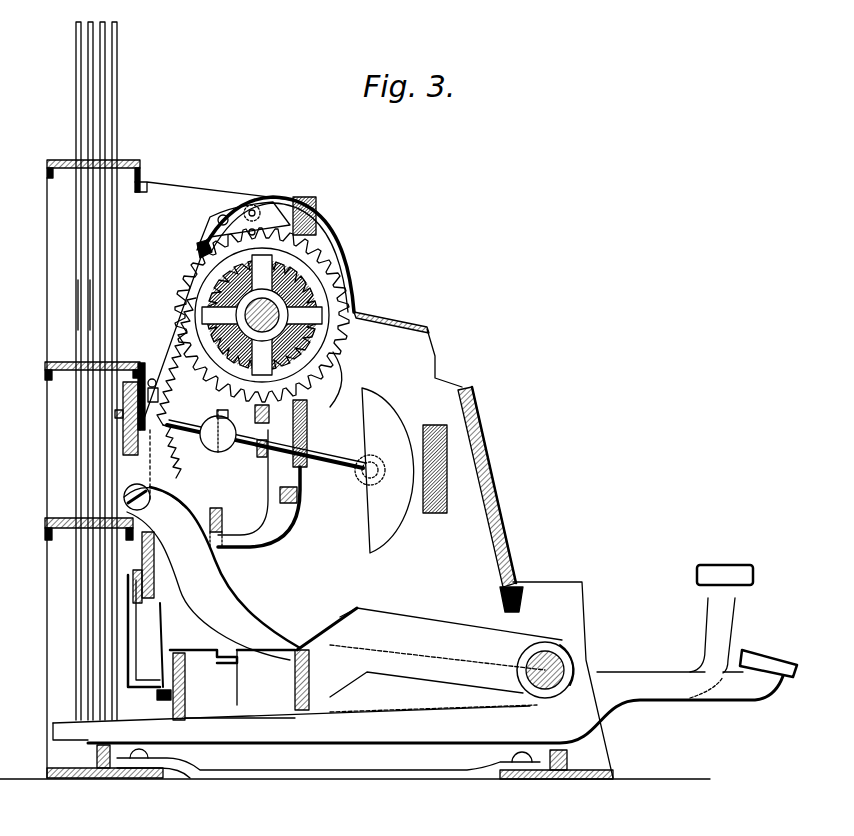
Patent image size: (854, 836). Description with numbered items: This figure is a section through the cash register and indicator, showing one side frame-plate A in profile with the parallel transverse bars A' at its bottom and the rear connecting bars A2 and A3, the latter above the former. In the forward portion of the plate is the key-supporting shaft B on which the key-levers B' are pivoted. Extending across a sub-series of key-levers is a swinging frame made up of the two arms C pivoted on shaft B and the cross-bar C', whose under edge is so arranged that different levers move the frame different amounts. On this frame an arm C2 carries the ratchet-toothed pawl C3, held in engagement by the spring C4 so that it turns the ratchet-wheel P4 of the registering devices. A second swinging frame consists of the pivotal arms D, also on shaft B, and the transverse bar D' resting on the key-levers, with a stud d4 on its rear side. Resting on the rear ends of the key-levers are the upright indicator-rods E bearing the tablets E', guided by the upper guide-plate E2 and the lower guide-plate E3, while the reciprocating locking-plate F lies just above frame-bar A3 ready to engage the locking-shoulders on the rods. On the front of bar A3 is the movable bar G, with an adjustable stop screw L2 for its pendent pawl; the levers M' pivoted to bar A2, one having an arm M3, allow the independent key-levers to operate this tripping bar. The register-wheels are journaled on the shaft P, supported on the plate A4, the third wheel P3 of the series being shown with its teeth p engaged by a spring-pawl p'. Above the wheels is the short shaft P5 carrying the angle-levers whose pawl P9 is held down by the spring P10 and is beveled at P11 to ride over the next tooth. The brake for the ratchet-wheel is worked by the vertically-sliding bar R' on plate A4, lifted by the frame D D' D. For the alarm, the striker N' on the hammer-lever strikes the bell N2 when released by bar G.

The indicator plates or tablets E' is at (106, 371).
The indicator-rods E is at (80, 314).
The upper guide-plate E2 is at (140, 166).
The locking-plate F is at (58, 358).
The lower guide-plate E3 is at (57, 520).
The shaft P is at (190, 312).
The register-wheel P3 is at (332, 312).
The ratchet-wheel P4 is at (305, 285).
The short shaft P5 is at (240, 204).
The pawl P9 is at (210, 240).
The spring P10 is at (218, 220).
The beveled or inclined side P11 is at (200, 252).
The spring-pawls p' is at (350, 379).
The teeth p is at (173, 370).
The plate A4 is at (318, 212).
The upright side frame-plates A is at (374, 523).
The bell or gong N2 is at (380, 398).
The striker N' is at (276, 452).
The vertically-sliding bar R' is at (260, 488).
The transverse frame-bar A3 is at (123, 398).
The movable bar G is at (145, 375).
The screw L2 is at (155, 380).
The transverse frame-bar A2 is at (142, 552).
The spring C4 is at (178, 502).
The ratchet-toothed pawl C3 is at (172, 465).
The arm C2 is at (243, 603).
The levers M' is at (161, 631).
The arm M3 is at (130, 642).
The transverse bar D' is at (196, 686).
The pivotal arms D is at (232, 684).
The stud or pin d4 is at (162, 695).
The cross-bar C' is at (326, 659).
The arms C is at (446, 653).
The key-supporting shaft B is at (548, 658).
The key-levers B' is at (425, 654).
The transverse bars A' is at (355, 777).